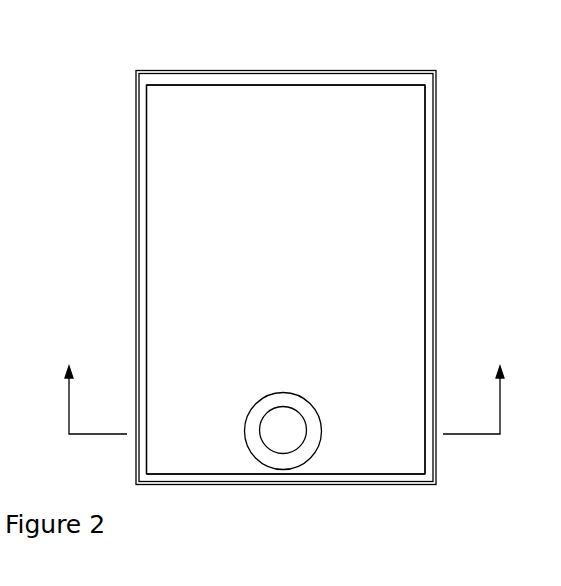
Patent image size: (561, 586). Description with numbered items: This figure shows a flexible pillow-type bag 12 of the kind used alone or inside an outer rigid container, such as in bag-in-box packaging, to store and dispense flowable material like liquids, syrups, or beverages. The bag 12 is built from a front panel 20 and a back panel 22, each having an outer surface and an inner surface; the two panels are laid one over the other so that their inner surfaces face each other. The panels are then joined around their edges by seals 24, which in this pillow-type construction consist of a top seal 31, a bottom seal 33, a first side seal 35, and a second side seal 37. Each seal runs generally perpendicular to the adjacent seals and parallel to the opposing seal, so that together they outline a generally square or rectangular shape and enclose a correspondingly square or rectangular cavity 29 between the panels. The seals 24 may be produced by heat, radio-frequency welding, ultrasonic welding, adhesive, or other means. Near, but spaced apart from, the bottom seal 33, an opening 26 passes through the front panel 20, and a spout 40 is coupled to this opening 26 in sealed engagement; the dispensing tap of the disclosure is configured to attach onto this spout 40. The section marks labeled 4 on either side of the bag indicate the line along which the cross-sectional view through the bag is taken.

The bag 12 is at (170, 110).
The back panel 22 is at (441, 215).
The front panel 20 is at (424, 267).
The seals 24 is at (355, 151).
The cavity 29 is at (322, 113).
The top seal 31 is at (273, 83).
The bottom seal 33 is at (405, 471).
The first side seal 35 is at (138, 320).
The second side seal 37 is at (424, 323).
The spout 40 is at (272, 460).
The opening 26 is at (306, 443).
The section line 4- 4 is at (284, 388).